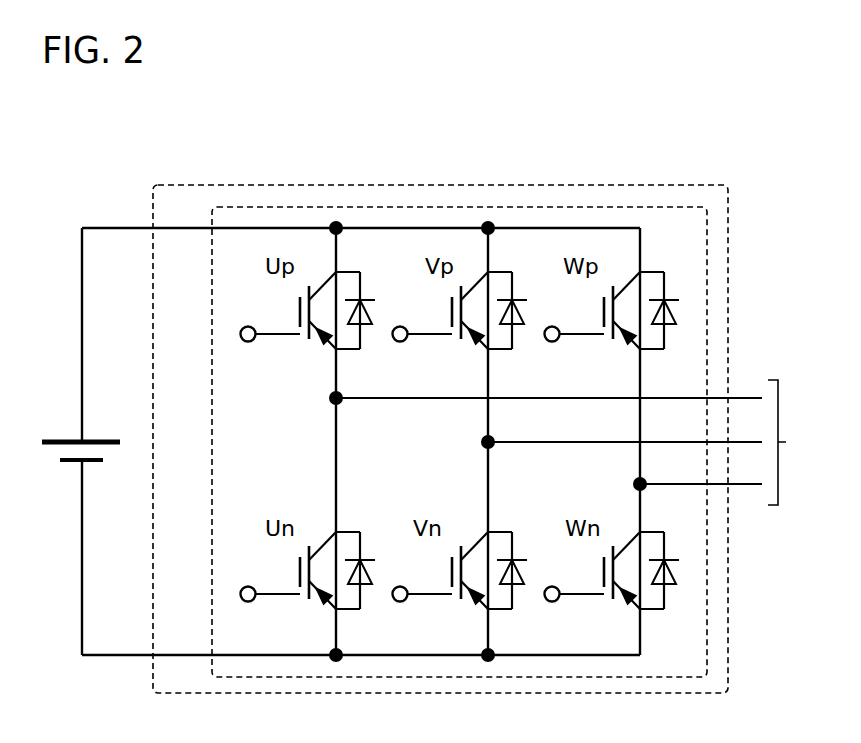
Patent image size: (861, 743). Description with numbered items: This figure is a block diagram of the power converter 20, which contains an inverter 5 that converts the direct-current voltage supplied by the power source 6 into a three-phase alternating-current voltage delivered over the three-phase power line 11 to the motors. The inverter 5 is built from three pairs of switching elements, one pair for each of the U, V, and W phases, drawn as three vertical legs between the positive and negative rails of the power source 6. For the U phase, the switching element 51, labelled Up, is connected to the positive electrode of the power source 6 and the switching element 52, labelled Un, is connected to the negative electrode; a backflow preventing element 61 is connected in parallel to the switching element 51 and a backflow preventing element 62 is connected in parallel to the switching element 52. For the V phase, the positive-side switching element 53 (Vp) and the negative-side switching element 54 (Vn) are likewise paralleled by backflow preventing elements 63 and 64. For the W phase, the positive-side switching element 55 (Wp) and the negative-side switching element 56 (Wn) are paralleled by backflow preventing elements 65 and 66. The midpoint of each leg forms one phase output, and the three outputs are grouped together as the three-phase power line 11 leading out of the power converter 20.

The power converter 20 is at (728, 199).
The inverter 5 is at (707, 280).
The power source 6 is at (62, 442).
The three-phase power line 11 is at (786, 442).
The switching element 51 is at (300, 341).
The switching element 52 is at (287, 600).
The switching element 53 is at (440, 341).
The switching element 54 is at (437, 603).
The switching element 55 is at (592, 341).
The switching element 56 is at (598, 601).
The backflow preventing element 61 is at (374, 297).
The backflow preventing element 62 is at (374, 558).
The backflow preventing element 63 is at (522, 297).
The backflow preventing element 64 is at (524, 559).
The backflow preventing element 65 is at (676, 297).
The backflow preventing element 66 is at (677, 558).